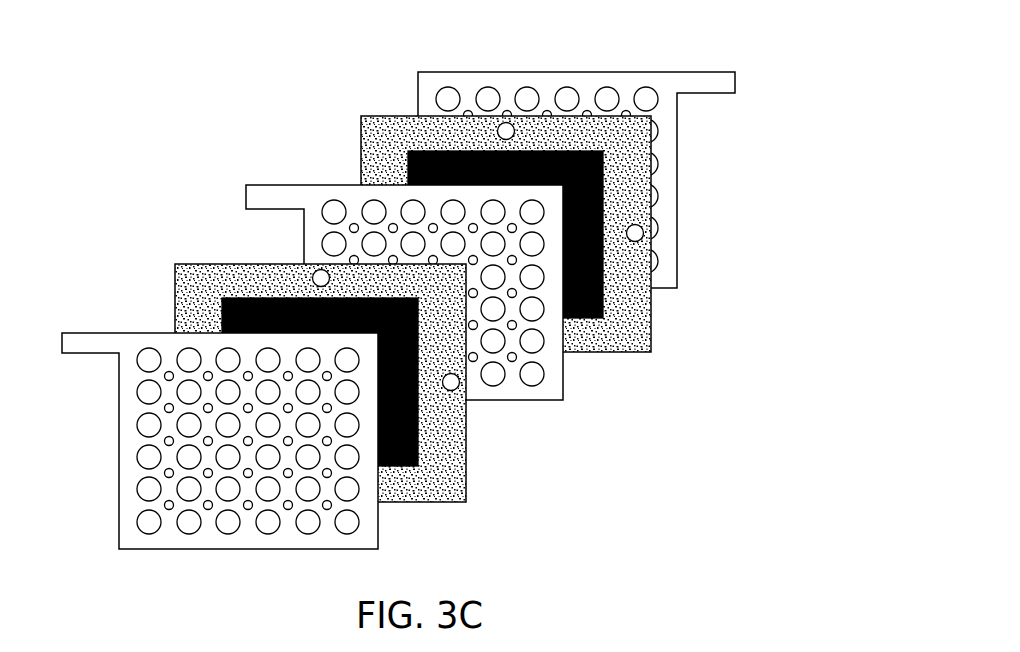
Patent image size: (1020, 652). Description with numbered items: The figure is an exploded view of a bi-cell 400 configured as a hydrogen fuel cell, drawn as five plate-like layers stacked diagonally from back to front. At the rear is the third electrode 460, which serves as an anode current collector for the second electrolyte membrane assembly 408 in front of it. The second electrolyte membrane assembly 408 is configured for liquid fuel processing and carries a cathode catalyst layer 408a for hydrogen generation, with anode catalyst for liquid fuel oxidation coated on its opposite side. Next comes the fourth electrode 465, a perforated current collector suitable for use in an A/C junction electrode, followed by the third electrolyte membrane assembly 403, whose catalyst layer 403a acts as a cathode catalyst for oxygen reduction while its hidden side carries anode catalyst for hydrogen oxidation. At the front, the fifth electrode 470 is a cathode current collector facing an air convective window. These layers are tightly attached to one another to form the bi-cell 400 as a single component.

The bi-cell 400 is at (413, 278).
The third electrode 460 is at (709, 170).
The second electrolyte membrane assembly 408 is at (518, 234).
The cathode catalyst layer 408a is at (408, 165).
The fourth electrode 465 is at (582, 381).
The third electrolyte membrane assembly 403 is at (298, 381).
The catalyst layer 403a is at (415, 440).
The fifth electrode 470 is at (96, 406).